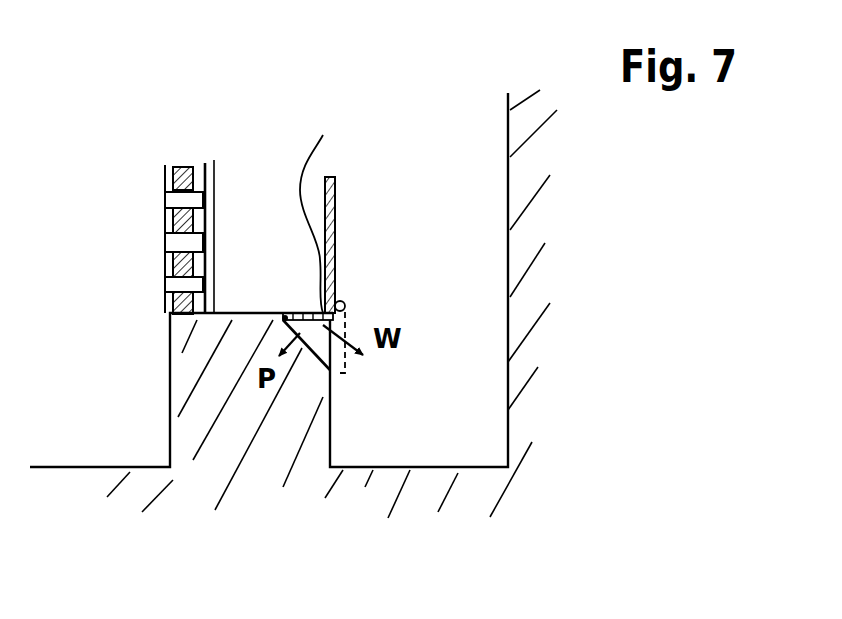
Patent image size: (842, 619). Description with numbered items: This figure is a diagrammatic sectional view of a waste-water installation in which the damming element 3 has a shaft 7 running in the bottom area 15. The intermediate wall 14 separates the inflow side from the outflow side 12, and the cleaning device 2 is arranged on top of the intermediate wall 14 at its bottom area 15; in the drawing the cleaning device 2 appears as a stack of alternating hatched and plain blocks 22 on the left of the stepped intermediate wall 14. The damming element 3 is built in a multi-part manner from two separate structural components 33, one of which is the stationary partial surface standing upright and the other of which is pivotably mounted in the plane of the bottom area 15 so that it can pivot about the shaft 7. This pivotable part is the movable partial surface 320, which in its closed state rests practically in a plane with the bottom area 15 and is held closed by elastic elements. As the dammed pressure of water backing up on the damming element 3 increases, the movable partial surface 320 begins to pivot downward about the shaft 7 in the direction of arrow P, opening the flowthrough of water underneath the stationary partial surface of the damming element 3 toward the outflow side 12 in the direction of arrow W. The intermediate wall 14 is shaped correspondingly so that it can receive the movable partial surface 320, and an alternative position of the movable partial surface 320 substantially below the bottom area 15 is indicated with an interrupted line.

The cleaning device 2 is at (171, 140).
The bearing stack 22 is at (170, 215).
The bottom area 15 is at (222, 310).
The movable partial surface 320 is at (407, 297).
The damming element 3 is at (333, 197).
The structural components 33 is at (333, 240).
The shaft 7 is at (345, 302).
The outflow side 12 is at (462, 413).
The intermediate wall 14 is at (230, 432).